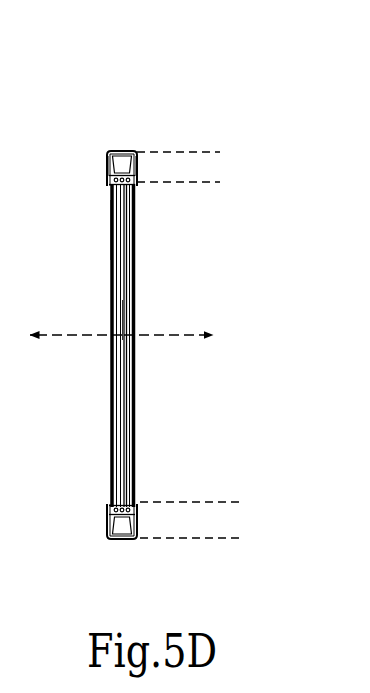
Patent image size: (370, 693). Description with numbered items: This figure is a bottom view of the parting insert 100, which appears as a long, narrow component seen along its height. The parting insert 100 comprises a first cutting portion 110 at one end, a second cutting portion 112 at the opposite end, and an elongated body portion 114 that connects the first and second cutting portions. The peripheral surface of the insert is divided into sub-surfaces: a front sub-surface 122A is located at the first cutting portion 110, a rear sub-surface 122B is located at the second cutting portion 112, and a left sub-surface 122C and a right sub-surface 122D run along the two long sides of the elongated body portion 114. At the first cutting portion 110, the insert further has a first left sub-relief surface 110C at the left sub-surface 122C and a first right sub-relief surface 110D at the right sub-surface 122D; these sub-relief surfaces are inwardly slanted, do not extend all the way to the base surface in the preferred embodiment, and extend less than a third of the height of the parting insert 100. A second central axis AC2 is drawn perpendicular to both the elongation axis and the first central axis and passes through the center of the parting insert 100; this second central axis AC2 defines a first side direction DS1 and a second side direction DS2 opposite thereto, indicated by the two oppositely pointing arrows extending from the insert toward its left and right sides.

The parting insert 100 is at (150, 130).
The first cutting portion 110 is at (222, 152).
The first left sub-relief surface 110C is at (142, 164).
The first right sub-relief surface 110D is at (106, 165).
The second cutting portion 112 is at (220, 502).
The elongated body portion 114 is at (222, 184).
The front sub-surface 122A is at (122, 145).
The rear sub-surface 122B is at (122, 546).
The left sub-surface 122C is at (137, 223).
The right sub-surface 122D is at (108, 229).
The second central axis AC2 is at (97, 334).
The first side direction DS1 is at (168, 320).
The second side direction DS2 is at (76, 319).